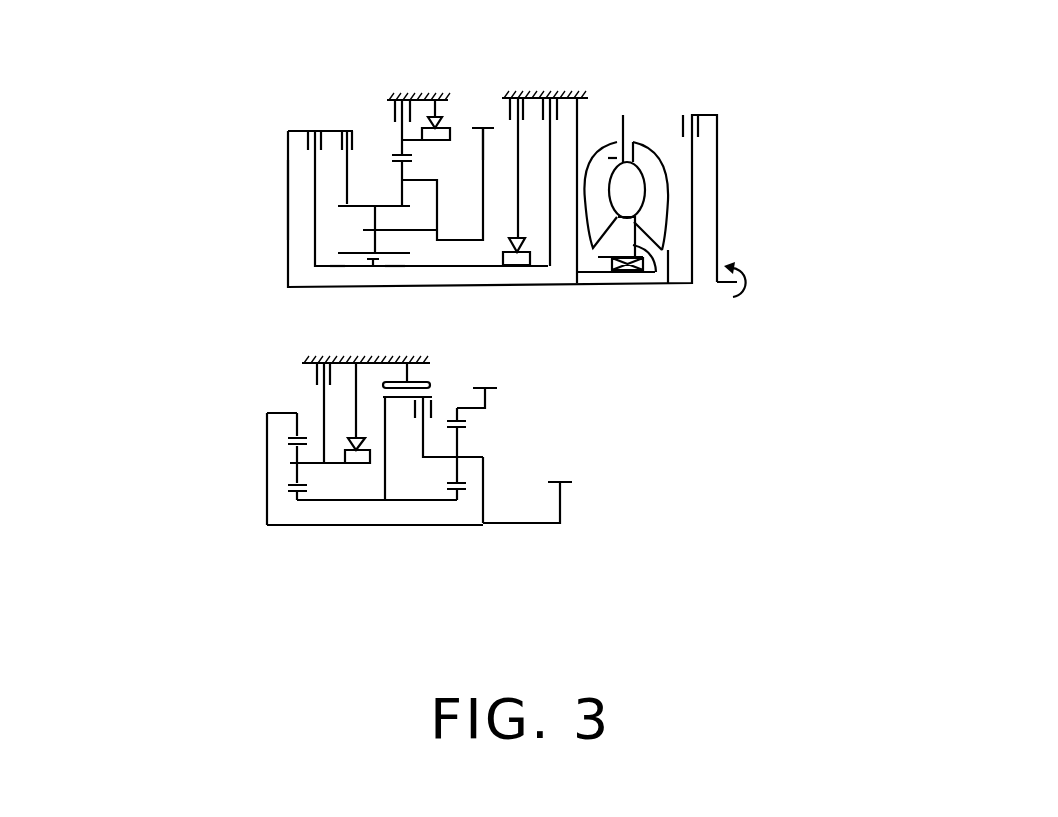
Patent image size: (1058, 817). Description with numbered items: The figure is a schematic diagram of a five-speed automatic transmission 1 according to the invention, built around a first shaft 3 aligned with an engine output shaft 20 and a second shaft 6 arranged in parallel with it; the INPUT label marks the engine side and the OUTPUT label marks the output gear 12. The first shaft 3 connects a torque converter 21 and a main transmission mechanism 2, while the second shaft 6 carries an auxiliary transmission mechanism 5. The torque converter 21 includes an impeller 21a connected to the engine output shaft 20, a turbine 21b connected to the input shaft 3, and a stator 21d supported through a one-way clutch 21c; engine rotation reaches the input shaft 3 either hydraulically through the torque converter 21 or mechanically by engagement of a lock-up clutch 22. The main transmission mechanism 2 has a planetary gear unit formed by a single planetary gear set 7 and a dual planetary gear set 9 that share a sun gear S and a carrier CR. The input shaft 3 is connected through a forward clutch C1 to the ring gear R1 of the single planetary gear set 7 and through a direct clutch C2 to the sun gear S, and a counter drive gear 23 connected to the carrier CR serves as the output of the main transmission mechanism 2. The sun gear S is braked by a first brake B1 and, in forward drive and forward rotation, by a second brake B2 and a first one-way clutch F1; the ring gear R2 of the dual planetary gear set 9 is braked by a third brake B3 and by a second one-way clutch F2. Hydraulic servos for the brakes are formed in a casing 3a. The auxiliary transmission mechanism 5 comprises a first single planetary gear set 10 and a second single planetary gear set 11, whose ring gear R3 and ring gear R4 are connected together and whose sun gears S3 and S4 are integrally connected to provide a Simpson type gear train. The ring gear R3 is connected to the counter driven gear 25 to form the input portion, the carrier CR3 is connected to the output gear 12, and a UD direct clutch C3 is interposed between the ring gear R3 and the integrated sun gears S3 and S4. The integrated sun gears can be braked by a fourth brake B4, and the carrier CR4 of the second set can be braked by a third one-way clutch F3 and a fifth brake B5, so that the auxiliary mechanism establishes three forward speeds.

The five-speed automatic transmission 1 is at (588, 56).
The main transmission mechanism 2 is at (261, 148).
The first shaft 3 is at (568, 285).
The casing 3a is at (288, 200).
The auxiliary transmission mechanism 5 is at (210, 409).
The second shaft 6 is at (392, 528).
The single planetary gear set 7 is at (337, 270).
The dual planetary gear set 9 is at (393, 268).
The first single planetary gear set 10 is at (479, 433).
The second single planetary gear set 11 is at (281, 412).
The output gear 12 is at (575, 480).
The engine output shaft 20 is at (727, 298).
The torque converter 21 is at (663, 117).
The impeller 21a is at (613, 158).
The turbine 21b is at (660, 190).
The one-way clutch 21c is at (630, 271).
The stator 21d is at (656, 272).
The lock-up clutch 22 is at (702, 117).
The counter drive gear 23 is at (473, 126).
The counter driven gear 25 is at (492, 387).
The forward clutch C1 is at (352, 124).
The direct clutch C2 is at (305, 124).
The UD direct clutch C3 is at (433, 448).
The first brake B1 is at (561, 173).
The second brake B2 is at (545, 151).
The third brake B3 is at (416, 91).
The fourth brake B4 is at (406, 360).
The fifth brake B5 is at (366, 398).
The first one-way clutch F1 is at (525, 235).
The second one-way clutch F2 is at (429, 100).
The third one-way clutch F3 is at (354, 416).
The ring gear R1 is at (349, 202).
The ring gear R2 is at (408, 153).
The ring gear R3 is at (447, 418).
The ring gear R4 is at (297, 436).
The carrier CR is at (441, 228).
The carrier CR3 is at (482, 453).
The carrier CR4 is at (292, 463).
The sun gear S is at (370, 268).
The sun gear S3 is at (465, 500).
The sun gear S4 is at (298, 498).
The input INPUT is at (759, 246).
The output OUTPUT is at (553, 456).